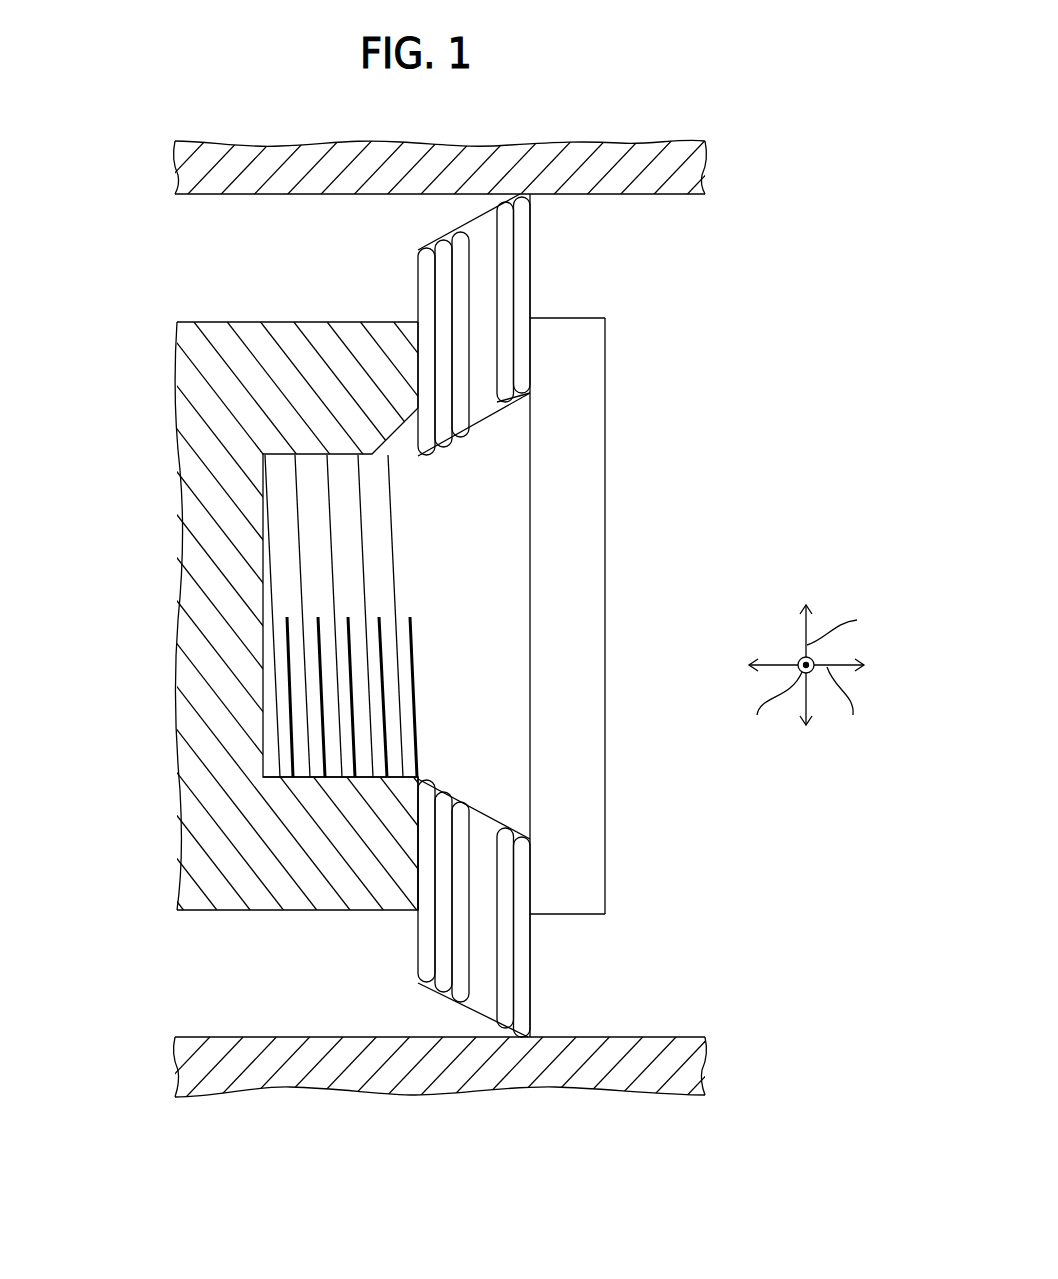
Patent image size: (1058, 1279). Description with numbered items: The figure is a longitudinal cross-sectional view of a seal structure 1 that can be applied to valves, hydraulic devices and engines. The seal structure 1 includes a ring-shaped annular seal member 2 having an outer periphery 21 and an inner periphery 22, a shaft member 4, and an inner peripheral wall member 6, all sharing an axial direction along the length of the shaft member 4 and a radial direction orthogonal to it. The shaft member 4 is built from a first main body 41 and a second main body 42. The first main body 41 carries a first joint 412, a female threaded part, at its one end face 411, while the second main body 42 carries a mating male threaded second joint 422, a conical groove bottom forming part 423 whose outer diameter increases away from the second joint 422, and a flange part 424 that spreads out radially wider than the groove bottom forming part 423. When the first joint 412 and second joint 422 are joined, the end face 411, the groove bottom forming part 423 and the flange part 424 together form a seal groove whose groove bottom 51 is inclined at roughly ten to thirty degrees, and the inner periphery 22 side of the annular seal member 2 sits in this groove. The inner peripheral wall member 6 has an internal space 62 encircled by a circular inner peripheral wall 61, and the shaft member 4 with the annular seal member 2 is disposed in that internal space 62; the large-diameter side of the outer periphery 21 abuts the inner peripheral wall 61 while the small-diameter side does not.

The seal structure 1 is at (128, 100).
The annular seal member 2 is at (542, 992).
The outer periphery 21 is at (460, 232).
The inner periphery 22 is at (478, 422).
The shaft member 4 is at (118, 360).
The first main body 41 is at (178, 877).
The one end face 411 is at (430, 895).
The first joint 412 is at (295, 780).
The second main body 42 is at (617, 576).
The second joint 422 is at (270, 750).
The groove bottom forming part 423 is at (510, 767).
The flange part 424 is at (573, 859).
The groove bottom 51 is at (484, 417).
The inner peripheral wall member 6 is at (413, 1093).
The inner peripheral wall 61 is at (205, 194).
The internal space 62 is at (268, 291).